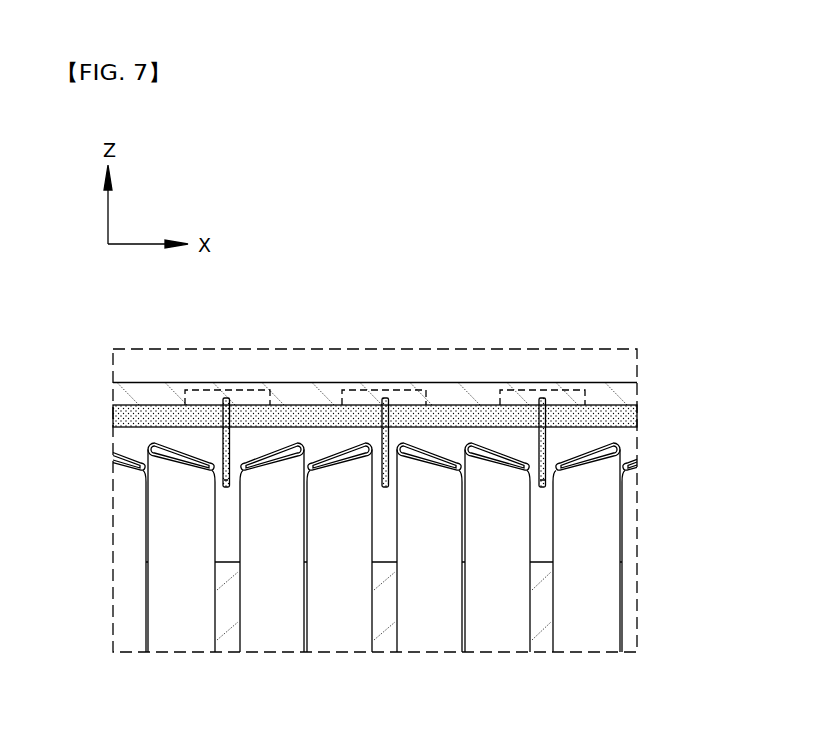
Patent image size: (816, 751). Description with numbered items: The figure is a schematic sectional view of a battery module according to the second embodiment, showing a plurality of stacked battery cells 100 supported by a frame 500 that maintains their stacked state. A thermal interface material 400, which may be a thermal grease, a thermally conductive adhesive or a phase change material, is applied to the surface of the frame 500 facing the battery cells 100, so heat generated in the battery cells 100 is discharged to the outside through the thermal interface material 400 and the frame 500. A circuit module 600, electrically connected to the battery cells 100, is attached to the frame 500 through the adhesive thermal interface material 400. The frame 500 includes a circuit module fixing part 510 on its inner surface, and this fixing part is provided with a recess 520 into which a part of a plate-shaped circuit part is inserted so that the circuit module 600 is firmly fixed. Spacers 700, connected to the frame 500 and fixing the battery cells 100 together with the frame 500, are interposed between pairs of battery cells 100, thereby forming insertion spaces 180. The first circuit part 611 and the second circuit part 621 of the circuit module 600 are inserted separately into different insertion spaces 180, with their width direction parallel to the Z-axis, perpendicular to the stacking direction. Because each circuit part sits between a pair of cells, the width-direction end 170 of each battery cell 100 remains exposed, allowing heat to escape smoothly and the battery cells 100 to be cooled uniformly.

The battery cell 100 is at (407, 628).
The end of the battery cell 170 is at (273, 473).
The insertion space 180 is at (541, 557).
The thermal interface material 400 is at (607, 417).
The frame 500 is at (135, 393).
The circuit module fixing part 510 is at (188, 393).
The recess 520 is at (228, 397).
The circuit module 600 is at (556, 434).
The first circuit part 611 is at (545, 480).
The second circuit part 621 is at (385, 477).
The spacer 700 is at (543, 608).